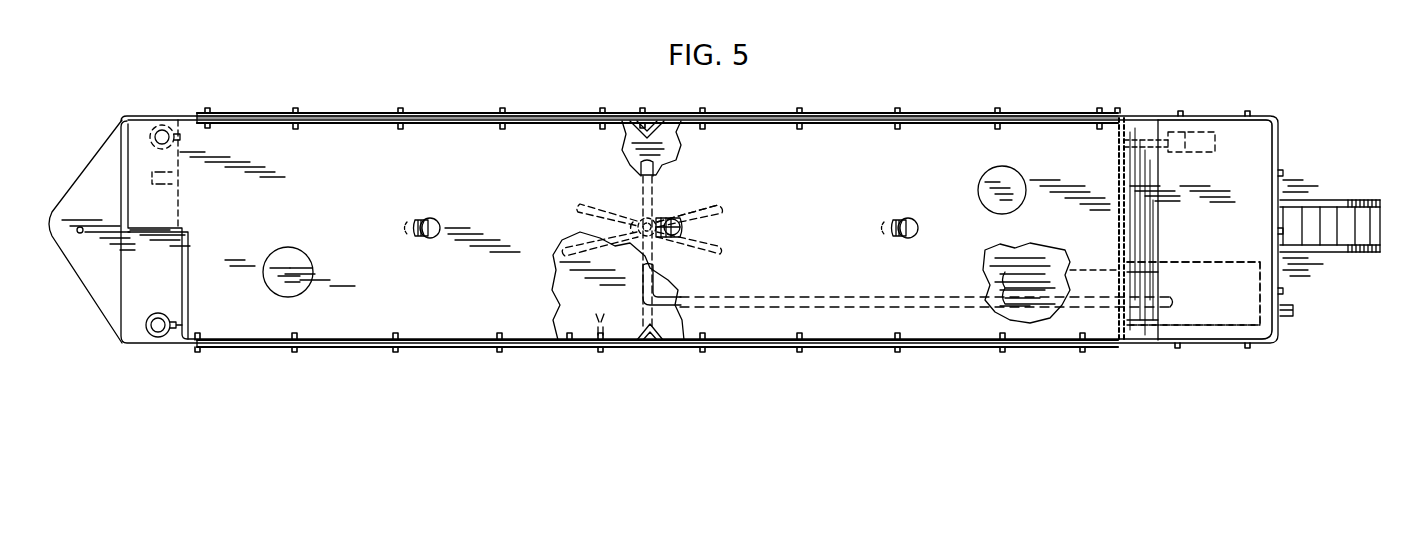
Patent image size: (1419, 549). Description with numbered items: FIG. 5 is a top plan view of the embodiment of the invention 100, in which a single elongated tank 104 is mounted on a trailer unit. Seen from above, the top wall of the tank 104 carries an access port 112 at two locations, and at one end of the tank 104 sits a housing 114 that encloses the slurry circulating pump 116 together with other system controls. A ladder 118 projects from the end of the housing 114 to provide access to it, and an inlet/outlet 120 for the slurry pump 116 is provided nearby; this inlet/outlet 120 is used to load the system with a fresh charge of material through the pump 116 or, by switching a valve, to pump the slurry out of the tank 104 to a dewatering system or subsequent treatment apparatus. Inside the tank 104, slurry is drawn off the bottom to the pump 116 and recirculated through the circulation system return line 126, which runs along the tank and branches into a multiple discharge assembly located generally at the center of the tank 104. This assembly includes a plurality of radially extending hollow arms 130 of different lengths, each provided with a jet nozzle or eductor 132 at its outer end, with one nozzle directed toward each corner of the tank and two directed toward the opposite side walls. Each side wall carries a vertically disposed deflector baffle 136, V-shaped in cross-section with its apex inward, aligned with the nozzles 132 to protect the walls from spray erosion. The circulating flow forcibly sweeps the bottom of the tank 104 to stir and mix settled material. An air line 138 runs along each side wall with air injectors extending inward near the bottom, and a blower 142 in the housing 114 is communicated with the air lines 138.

The embodiment of the invention 100 is at (427, 104).
The elongated tank 104 is at (515, 142).
The access port 112 is at (293, 256).
The housing 114 is at (1250, 143).
The slurry circulating pump 116 is at (1197, 272).
The ladder 118 is at (1318, 205).
The inlet/outlet 120 is at (1292, 318).
The circulation system return line 126 is at (778, 300).
The radially extending arms 130 is at (707, 200).
The jet nozzle or eductor 132 is at (722, 211).
The deflector baffle 136 is at (631, 141).
The air line 138 is at (813, 114).
The blower 142 is at (1200, 130).